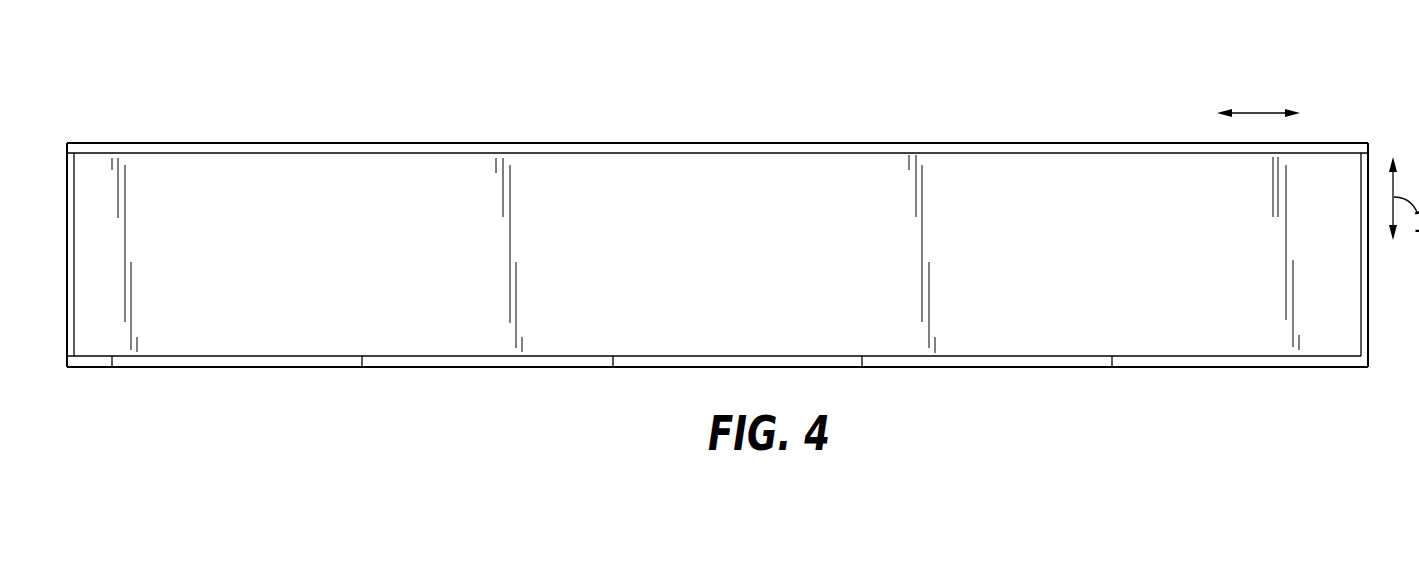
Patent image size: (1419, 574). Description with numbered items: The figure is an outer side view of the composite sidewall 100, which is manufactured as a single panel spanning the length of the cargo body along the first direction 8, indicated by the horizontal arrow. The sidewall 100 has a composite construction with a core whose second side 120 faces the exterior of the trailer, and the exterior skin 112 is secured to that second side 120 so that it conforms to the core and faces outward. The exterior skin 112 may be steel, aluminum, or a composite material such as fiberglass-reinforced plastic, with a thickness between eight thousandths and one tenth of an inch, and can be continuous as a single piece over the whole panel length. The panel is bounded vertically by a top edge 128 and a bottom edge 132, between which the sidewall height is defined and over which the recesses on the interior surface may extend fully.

The sidewall 100 is at (160, 92).
The top edge 128 is at (287, 142).
The second side 120 is at (861, 177).
The exterior skin 112 is at (538, 187).
The bottom edge 132 is at (412, 360).
The first direction 8 is at (1258, 112).